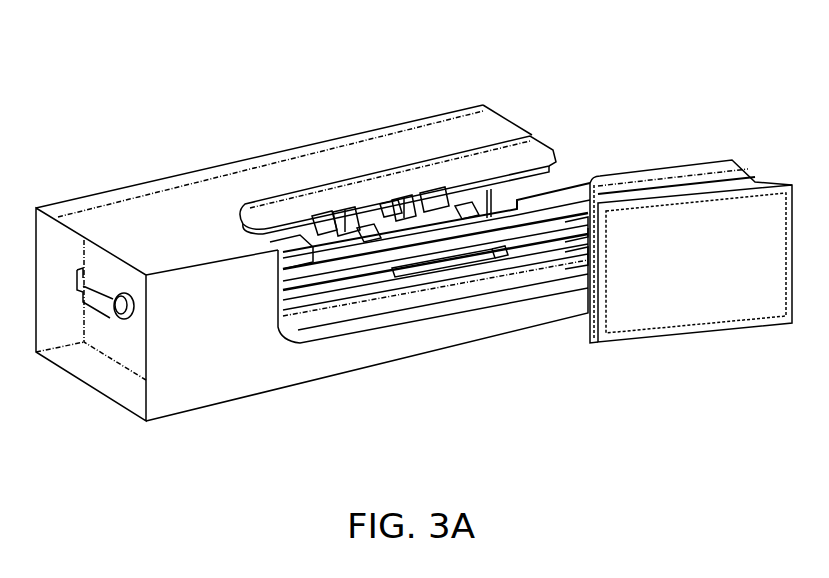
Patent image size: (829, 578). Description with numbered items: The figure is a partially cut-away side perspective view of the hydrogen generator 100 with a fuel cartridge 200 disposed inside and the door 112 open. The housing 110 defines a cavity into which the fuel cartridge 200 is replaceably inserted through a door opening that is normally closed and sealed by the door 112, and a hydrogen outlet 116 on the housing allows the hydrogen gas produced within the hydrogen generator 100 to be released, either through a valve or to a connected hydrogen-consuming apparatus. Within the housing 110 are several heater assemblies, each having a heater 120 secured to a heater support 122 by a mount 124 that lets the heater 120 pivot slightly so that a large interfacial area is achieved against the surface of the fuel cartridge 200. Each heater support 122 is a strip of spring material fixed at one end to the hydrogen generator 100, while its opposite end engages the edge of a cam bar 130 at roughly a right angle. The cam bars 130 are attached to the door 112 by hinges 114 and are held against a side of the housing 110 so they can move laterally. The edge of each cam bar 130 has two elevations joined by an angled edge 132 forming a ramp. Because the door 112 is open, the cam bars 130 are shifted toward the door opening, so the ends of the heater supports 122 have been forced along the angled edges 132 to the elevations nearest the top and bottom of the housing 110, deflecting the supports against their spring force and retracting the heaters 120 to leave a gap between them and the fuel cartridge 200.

The hydrogen generator 100 is at (203, 58).
The housing 110 is at (140, 183).
The door 112 is at (683, 335).
The hinges 114 is at (587, 235).
The hydrogen outlet 116 is at (110, 303).
The heater 120 is at (278, 236).
The heater support 122 is at (325, 223).
The mount 124 is at (397, 207).
The cam bar 130 is at (558, 194).
The angled edge 132 is at (367, 240).
The fuel cartridge 200 is at (433, 270).